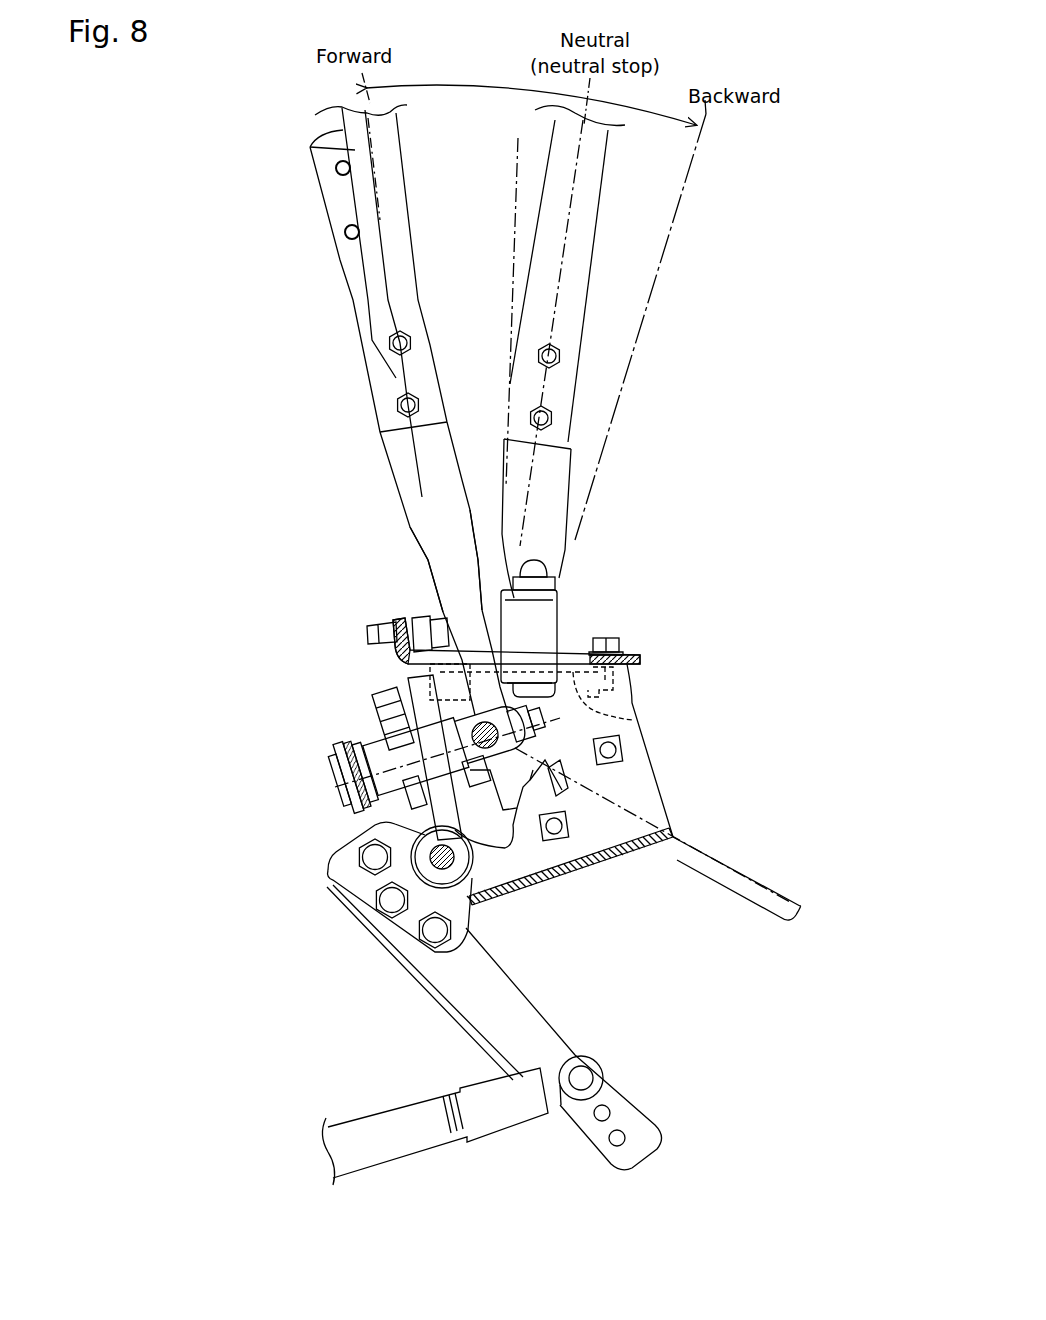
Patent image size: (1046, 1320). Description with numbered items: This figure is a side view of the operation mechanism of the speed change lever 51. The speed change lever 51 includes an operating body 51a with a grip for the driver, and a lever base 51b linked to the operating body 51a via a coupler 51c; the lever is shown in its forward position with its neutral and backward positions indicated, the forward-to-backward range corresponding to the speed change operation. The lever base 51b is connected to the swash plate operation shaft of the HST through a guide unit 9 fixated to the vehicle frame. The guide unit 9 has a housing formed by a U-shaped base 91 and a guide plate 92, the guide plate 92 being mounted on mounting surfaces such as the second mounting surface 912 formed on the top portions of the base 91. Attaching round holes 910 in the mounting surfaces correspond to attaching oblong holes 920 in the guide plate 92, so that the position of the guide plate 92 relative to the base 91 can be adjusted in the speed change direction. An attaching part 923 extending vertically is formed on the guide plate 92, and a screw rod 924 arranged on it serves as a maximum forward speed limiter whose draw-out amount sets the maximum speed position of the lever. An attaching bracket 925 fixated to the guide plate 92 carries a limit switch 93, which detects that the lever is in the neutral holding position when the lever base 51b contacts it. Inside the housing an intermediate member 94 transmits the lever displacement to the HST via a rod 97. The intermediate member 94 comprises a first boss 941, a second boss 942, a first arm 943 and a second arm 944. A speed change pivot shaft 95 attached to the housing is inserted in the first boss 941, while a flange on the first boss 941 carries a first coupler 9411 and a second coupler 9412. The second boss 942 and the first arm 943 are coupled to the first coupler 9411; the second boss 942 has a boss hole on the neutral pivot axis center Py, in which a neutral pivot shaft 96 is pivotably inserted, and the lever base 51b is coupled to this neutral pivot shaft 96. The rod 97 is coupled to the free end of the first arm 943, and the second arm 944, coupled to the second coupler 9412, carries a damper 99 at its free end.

The speed change lever 51 is at (300, 241).
The operating body 51a is at (310, 147).
The lever base 51b is at (418, 503).
The coupler 51c is at (383, 385).
The attaching bracket 925 is at (468, 638).
The limit switch 93 is at (537, 563).
The guide unit 9 is at (610, 630).
The attaching oblong holes 920 is at (612, 655).
The guide plate 92 is at (640, 660).
The attaching round holes 910 is at (614, 680).
The second mounting surface 912 is at (622, 716).
The base 91 is at (640, 775).
The neutral pivot shaft 96 is at (575, 765).
The rod 97 is at (728, 868).
The first coupler 9411 is at (405, 676).
The second boss 942 is at (386, 740).
The attaching part 923 is at (395, 625).
The screw rod 924 is at (425, 616).
The neutral pivot axis center Py is at (335, 787).
The first boss 941 is at (385, 838).
The first arm 943 is at (500, 820).
The speed change pivot shaft 95 is at (453, 858).
The intermediate member 94 is at (322, 883).
The second coupler 9412 is at (403, 928).
The second arm 944 is at (540, 1010).
The damper 99 is at (415, 1105).